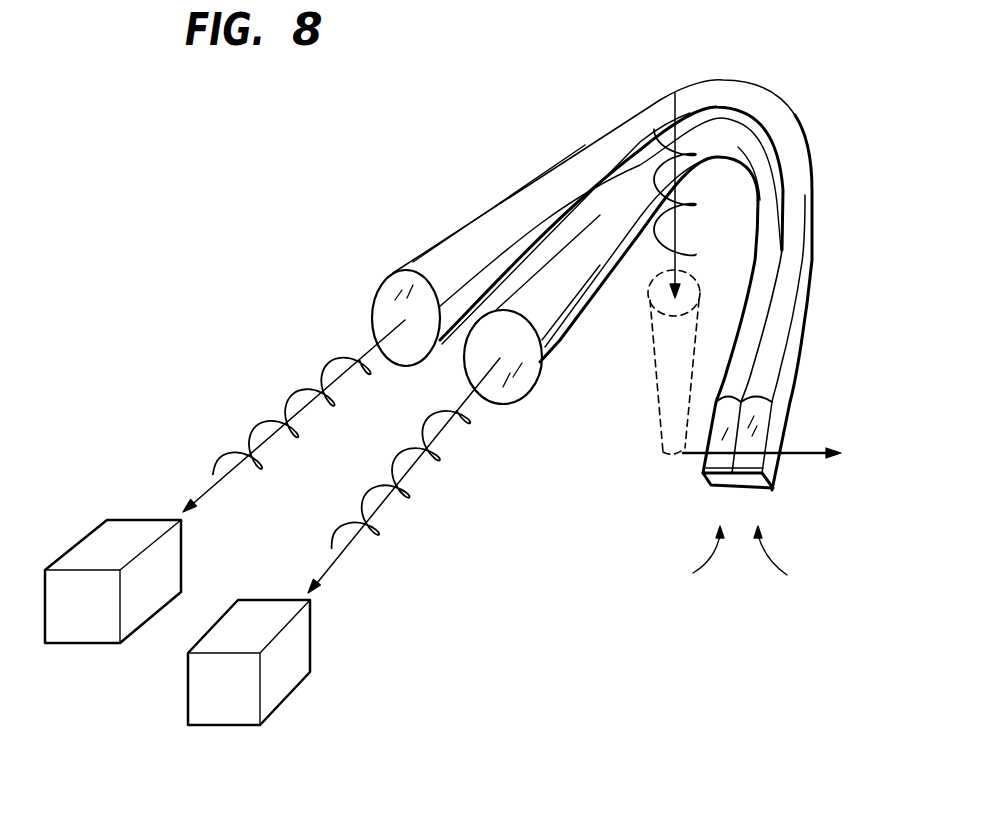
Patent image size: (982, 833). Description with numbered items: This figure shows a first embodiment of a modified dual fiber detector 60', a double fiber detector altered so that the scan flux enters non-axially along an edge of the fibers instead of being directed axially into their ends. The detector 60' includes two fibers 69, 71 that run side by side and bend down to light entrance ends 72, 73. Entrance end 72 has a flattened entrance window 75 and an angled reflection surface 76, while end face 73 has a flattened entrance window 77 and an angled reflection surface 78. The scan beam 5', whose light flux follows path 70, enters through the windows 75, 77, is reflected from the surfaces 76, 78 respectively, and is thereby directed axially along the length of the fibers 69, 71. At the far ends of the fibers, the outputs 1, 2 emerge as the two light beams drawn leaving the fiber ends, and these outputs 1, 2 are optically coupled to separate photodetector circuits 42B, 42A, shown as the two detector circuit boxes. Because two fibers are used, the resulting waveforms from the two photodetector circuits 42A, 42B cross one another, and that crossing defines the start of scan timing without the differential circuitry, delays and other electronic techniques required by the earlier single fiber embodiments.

The modified dual fiber detector 60' is at (620, 342).
The fiber 69 is at (437, 257).
The fiber 71 is at (568, 280).
The scan beam 5' is at (658, 273).
The flattened entrance window 75 is at (728, 410).
The flattened entrance window 77 is at (752, 410).
The path 70 is at (797, 455).
The angled reflection surface 76 is at (717, 483).
The angled reflection surface 78 is at (748, 486).
The light entrance end 72 is at (693, 605).
The light entrance end 73 is at (818, 605).
The output 2 is at (294, 416).
The output 1 is at (404, 475).
The photodetector circuit 42A is at (117, 548).
The photodetector circuit 42B is at (283, 665).